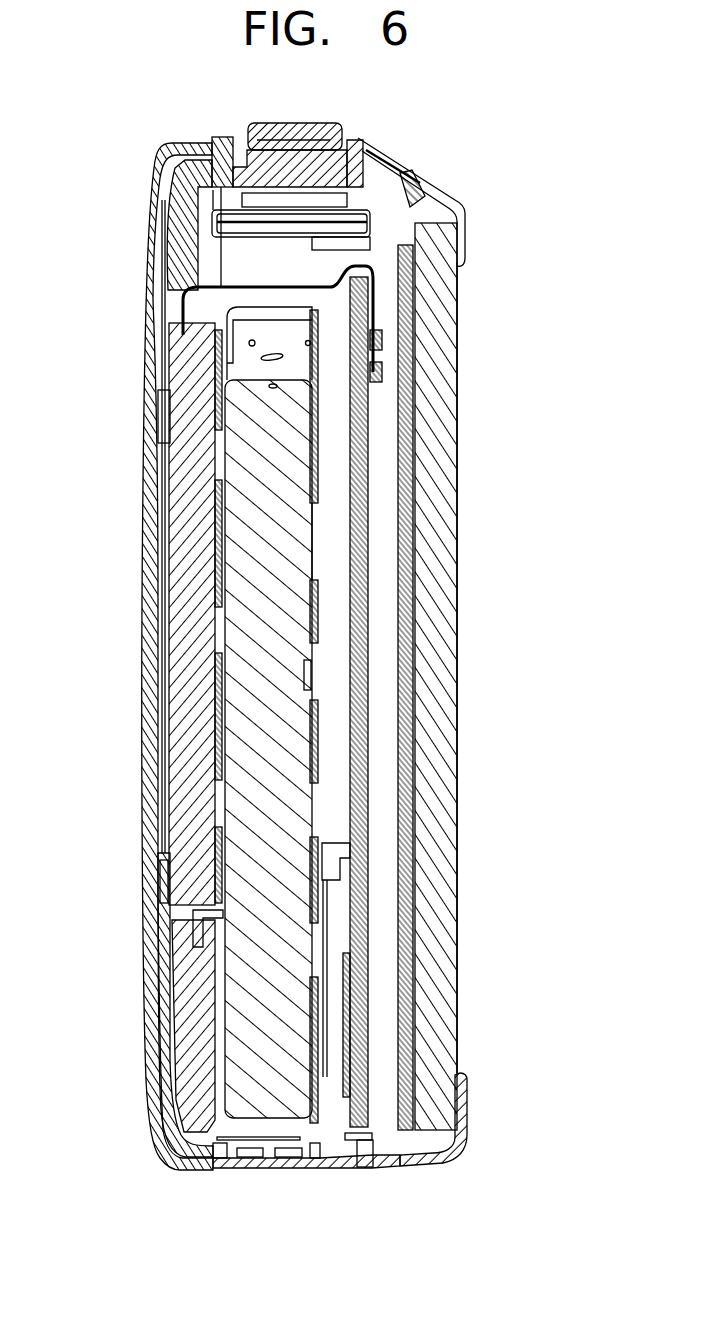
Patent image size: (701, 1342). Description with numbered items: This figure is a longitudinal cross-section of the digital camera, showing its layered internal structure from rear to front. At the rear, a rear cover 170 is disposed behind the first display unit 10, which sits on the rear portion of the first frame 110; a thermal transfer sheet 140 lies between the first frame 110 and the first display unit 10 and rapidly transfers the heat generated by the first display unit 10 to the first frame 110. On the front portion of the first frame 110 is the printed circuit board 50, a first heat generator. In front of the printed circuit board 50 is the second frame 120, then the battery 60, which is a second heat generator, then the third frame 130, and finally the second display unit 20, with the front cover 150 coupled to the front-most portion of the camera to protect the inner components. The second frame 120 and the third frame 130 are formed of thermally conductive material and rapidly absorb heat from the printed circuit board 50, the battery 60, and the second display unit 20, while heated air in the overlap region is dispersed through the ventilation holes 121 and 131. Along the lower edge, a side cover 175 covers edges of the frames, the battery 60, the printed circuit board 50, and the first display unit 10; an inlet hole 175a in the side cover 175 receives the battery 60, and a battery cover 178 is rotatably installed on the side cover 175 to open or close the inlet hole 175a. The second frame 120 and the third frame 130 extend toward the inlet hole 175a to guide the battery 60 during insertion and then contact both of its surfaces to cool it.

The first display unit 10 is at (472, 385).
The second display unit 20 is at (185, 610).
The printed circuit board 50 is at (386, 494).
The battery 60 is at (285, 670).
The first frame 110 is at (391, 531).
The second frame 120 is at (332, 740).
The ventilation hole 121 is at (313, 572).
The third frame 130 is at (218, 930).
The ventilation hole 131 is at (220, 824).
The thermal transfer sheet 140 is at (440, 428).
The front cover 150 is at (130, 815).
The rear cover 170 is at (476, 1096).
The side cover 175 is at (408, 1186).
The inlet hole 175a is at (366, 1169).
The battery cover 178 is at (260, 1166).